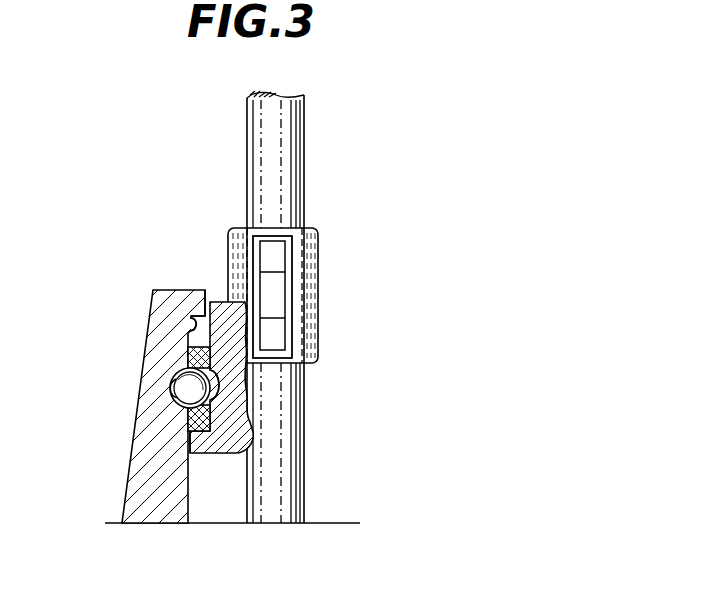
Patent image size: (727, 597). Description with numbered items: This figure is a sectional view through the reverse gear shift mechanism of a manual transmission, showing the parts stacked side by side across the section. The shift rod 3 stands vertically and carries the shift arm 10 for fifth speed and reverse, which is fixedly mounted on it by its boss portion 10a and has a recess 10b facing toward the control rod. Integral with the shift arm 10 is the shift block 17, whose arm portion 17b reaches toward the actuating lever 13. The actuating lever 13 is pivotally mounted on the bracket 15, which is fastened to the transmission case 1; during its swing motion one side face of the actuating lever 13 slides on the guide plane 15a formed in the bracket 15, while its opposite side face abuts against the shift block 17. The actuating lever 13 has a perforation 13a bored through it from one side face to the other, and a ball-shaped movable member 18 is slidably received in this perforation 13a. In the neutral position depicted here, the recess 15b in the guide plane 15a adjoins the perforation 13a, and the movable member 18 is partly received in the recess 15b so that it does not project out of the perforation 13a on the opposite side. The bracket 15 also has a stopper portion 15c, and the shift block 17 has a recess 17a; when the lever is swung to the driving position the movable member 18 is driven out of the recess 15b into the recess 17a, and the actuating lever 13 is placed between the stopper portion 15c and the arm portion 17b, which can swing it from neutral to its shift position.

The transmission case 1 is at (345, 523).
The shift rod 3 is at (305, 132).
The shift arm 10 is at (316, 292).
The boss portion 10a is at (318, 273).
The recess 10b is at (268, 316).
The actuating lever 13 is at (190, 355).
The perforation 13a is at (224, 433).
The bracket 15 is at (136, 375).
The guide plane 15a is at (188, 326).
The recess 15b is at (176, 395).
The stopper portion 15c is at (196, 298).
The shift block 17 is at (271, 432).
The recess 17a is at (222, 384).
The arm portion 17b is at (200, 454).
The movable member 18 is at (193, 382).